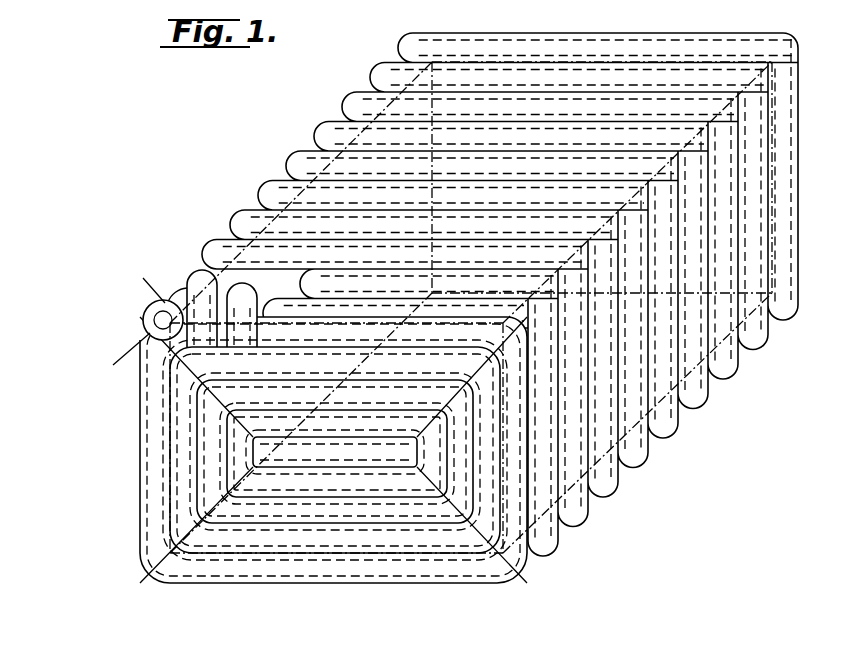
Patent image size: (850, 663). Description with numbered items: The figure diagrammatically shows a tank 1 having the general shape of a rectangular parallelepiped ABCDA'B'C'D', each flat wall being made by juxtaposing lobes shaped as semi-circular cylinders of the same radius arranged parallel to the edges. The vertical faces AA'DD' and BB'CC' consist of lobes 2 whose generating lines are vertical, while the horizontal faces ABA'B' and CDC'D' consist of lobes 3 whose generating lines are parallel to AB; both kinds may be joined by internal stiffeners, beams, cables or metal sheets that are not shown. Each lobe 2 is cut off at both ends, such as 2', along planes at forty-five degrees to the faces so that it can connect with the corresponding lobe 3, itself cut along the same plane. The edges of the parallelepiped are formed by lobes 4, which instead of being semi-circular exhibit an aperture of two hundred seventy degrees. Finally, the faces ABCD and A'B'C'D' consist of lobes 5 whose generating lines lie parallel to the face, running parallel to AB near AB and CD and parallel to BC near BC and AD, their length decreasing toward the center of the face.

The tank 1 is at (253, 180).
The lobes 2 is at (491, 294).
The cut-off ends of lobes 2' is at (200, 280).
The lobes 3 is at (548, 105).
The lobes 4 is at (715, 46).
The lobes 5 is at (306, 488).